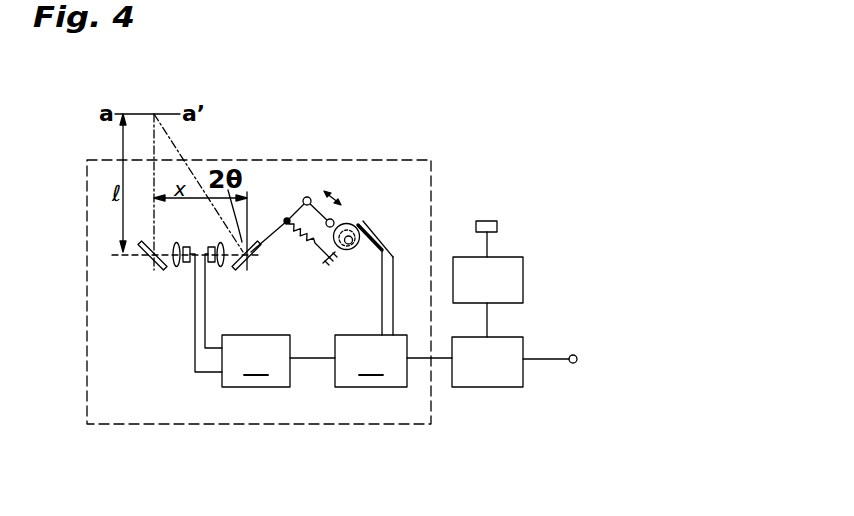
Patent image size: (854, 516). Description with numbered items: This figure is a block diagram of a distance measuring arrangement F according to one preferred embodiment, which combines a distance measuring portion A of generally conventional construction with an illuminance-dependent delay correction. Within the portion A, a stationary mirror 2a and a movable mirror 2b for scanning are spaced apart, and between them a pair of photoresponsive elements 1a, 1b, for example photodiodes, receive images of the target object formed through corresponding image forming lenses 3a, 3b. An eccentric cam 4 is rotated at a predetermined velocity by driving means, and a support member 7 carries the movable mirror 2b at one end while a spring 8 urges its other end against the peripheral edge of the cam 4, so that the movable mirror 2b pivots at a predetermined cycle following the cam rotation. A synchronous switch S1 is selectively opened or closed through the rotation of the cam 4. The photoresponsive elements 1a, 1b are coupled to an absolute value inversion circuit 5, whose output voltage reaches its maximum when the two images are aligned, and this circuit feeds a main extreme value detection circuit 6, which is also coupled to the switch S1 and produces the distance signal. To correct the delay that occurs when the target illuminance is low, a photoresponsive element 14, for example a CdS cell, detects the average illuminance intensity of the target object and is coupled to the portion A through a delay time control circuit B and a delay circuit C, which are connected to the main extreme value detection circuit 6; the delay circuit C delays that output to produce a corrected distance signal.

The photoresponsive element 1a is at (184, 246).
The photoresponsive element 1b is at (211, 246).
The stationary mirror 2a is at (143, 254).
The movable mirror 2b is at (250, 268).
The image forming lens 3a is at (176, 268).
The image forming lens 3b is at (221, 268).
The eccentric cam 4 is at (348, 224).
The absolute value inversion circuit 5 is at (230, 388).
The main extreme value detection circuit 6 is at (365, 388).
The support member 7 is at (305, 198).
The spring 8 is at (305, 246).
The photoresponsive element 14 is at (497, 221).
The distance measuring portion A is at (252, 160).
The delay time control circuit B is at (523, 280).
The delay circuit C is at (495, 388).
The distance measuring arrangement F is at (451, 138).
The synchronous switch S1 is at (373, 232).